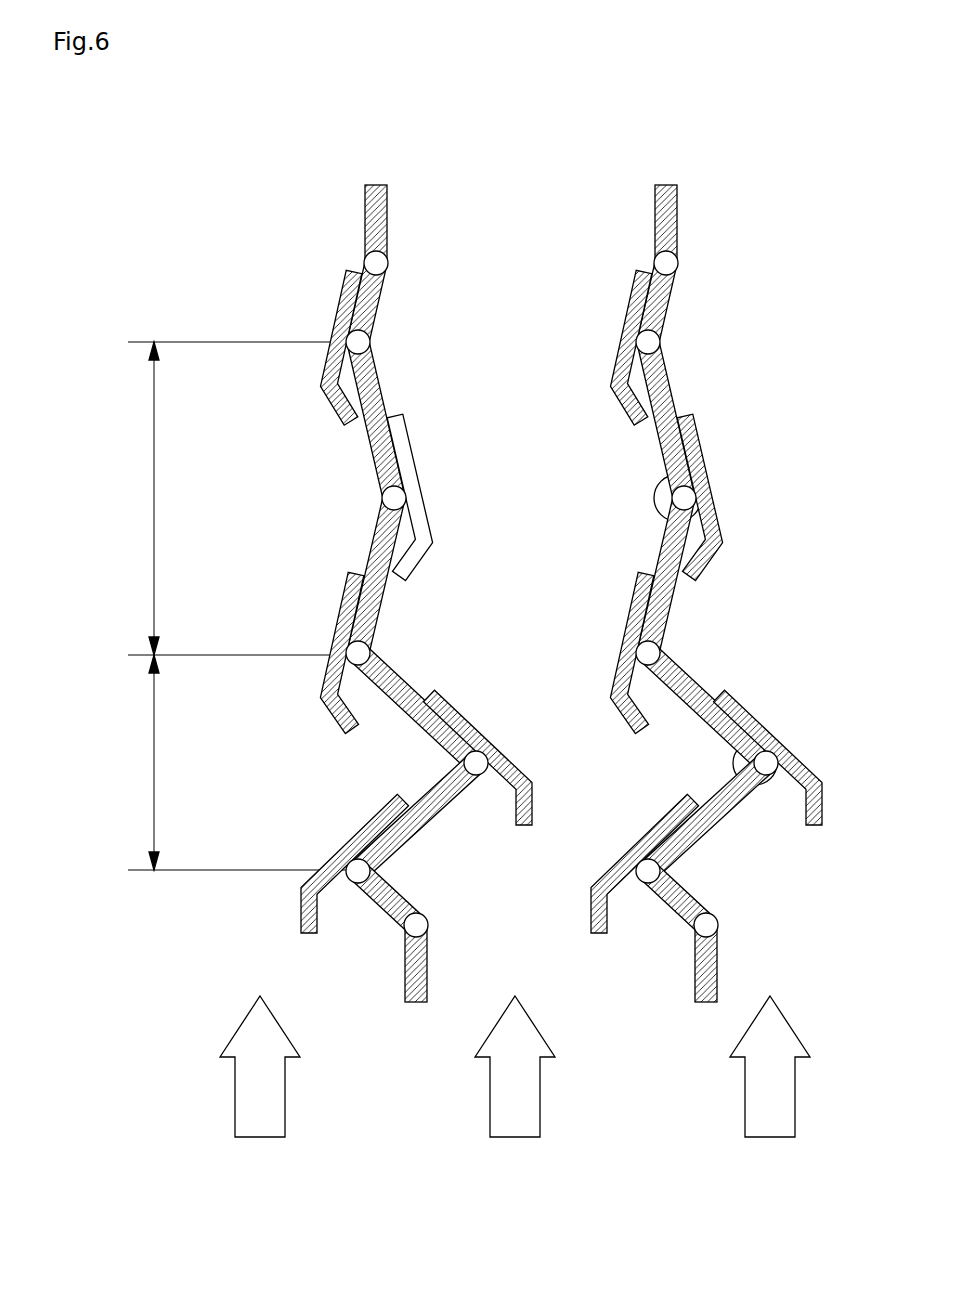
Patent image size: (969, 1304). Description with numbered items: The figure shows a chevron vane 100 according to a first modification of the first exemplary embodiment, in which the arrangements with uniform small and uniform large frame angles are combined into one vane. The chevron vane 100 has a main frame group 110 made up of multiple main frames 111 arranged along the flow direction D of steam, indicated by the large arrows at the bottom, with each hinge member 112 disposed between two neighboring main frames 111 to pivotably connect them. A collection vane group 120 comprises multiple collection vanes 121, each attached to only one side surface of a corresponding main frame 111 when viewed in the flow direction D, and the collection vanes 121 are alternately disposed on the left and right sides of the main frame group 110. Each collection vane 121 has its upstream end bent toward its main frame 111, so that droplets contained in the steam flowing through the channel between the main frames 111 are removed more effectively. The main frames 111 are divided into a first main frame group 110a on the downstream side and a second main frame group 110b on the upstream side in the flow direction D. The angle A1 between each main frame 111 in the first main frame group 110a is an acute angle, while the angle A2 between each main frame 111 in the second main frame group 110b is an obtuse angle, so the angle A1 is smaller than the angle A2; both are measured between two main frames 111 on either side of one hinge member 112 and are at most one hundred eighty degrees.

The chevron vane 100 is at (288, 105).
The main frame group 110 is at (332, 451).
The first main frame group 110a is at (154, 768).
The second main frame group 110b is at (154, 488).
The main frame 111 is at (415, 710).
The hinge member 112 is at (394, 498).
The collection vane group 120 is at (723, 452).
The collection vane 121 is at (757, 728).
The angle A1 is at (745, 752).
The angle A2 is at (655, 486).
The flow direction D is at (515, 1066).